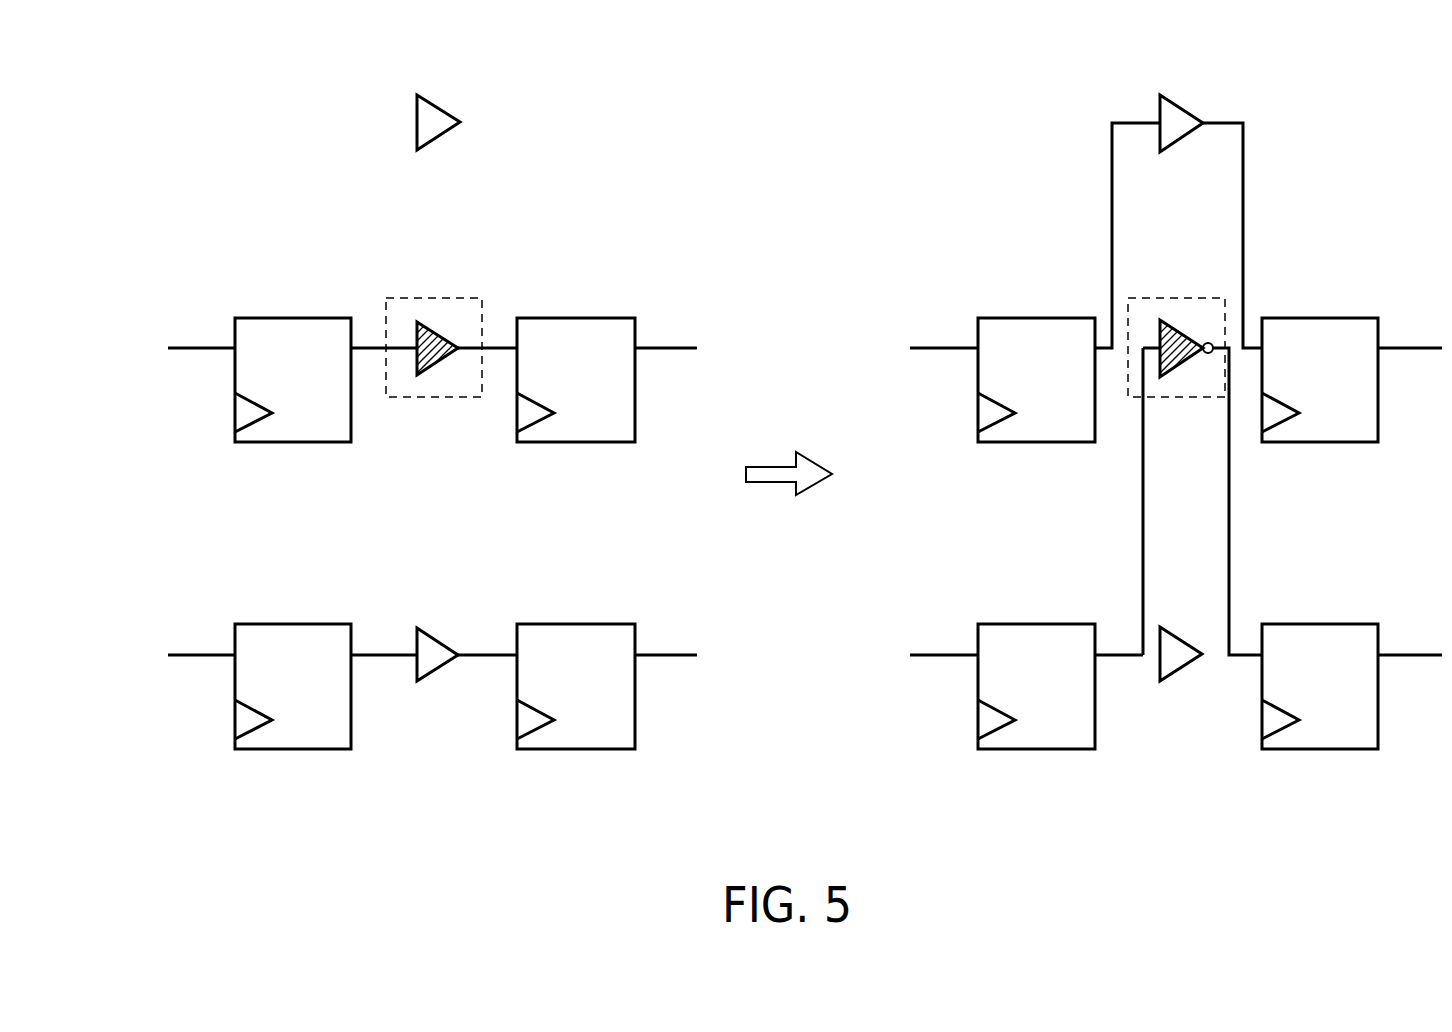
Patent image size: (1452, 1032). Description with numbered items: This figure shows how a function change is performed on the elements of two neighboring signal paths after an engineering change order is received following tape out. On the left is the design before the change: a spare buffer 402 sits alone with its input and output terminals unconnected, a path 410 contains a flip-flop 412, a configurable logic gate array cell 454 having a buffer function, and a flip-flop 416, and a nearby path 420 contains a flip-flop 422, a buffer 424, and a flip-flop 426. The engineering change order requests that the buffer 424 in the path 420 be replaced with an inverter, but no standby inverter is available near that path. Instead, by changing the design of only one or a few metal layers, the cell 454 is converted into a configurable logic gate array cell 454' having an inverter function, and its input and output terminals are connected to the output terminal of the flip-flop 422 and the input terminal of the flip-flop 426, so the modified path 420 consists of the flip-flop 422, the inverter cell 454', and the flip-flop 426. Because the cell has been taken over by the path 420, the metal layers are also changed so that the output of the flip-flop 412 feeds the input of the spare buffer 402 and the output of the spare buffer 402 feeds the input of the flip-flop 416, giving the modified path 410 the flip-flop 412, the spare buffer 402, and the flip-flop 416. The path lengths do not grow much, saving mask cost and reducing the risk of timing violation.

The spare buffer 402 is at (441, 100).
The path 410 is at (232, 256).
The flip-flop 412 is at (294, 318).
The configurable logic gate array cell 454 is at (442, 303).
The configurable logic gate array cell having an inverter function 454' is at (1184, 303).
The flip-flop 416 is at (578, 318).
The path 420 is at (232, 561).
The flip-flop 422 is at (294, 624).
The buffer 424 is at (439, 633).
The flip-flop 426 is at (578, 624).